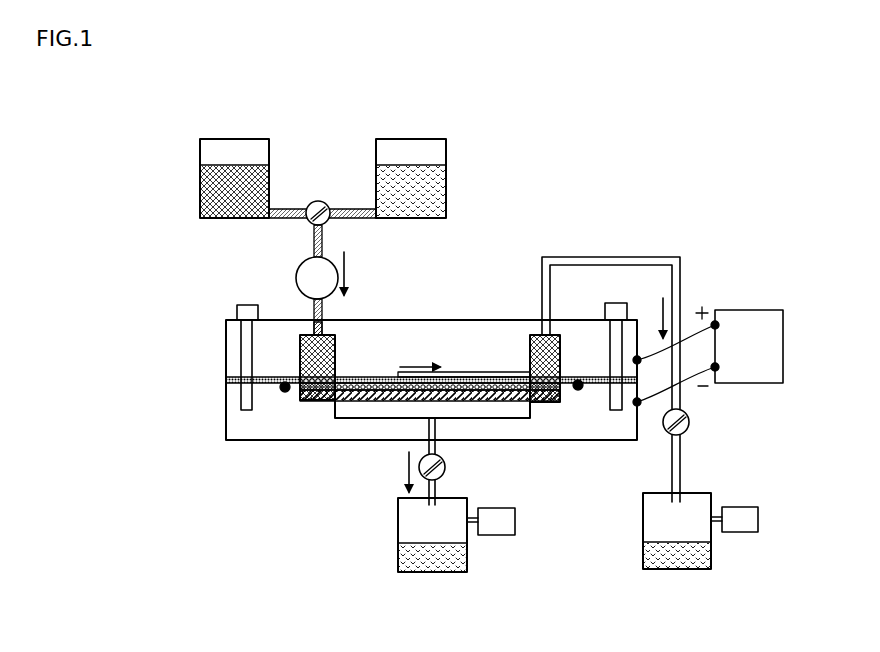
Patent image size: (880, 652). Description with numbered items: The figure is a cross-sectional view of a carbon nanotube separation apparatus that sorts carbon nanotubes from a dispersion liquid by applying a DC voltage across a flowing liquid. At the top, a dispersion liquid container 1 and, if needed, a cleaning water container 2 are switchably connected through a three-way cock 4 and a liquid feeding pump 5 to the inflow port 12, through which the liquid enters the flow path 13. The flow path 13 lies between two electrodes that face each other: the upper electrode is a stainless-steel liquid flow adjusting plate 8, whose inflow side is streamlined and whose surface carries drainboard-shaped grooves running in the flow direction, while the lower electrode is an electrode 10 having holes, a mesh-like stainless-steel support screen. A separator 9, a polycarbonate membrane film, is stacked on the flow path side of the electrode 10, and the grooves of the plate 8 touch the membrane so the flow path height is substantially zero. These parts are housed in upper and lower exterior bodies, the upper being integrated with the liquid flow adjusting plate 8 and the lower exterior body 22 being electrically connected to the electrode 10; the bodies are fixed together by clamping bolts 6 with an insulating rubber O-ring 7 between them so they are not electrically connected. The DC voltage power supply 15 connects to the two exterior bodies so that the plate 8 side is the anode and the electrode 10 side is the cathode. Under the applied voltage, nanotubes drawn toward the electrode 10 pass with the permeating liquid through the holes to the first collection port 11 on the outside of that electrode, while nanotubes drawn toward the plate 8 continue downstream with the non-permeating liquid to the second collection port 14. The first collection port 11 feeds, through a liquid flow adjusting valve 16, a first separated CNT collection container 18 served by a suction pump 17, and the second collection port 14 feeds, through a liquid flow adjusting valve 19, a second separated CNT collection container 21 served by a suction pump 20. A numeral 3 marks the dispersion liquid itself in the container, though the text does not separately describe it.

The dispersion liquid container 1 is at (228, 139).
The cleaning water container 2 is at (410, 139).
The plating liquid 3 is at (232, 192).
The three-way cock 4 is at (309, 205).
The liquid feeding pump 5 is at (297, 270).
The clamping bolts 6 is at (238, 311).
The rubber O-ring 7 is at (275, 389).
The liquid flow adjusting plate 8 is at (288, 347).
The separator 9 is at (330, 400).
The electrode having holes 10 is at (350, 394).
The first collection port 11 is at (402, 412).
The inflow port 12 is at (328, 334).
The flow path 13 is at (490, 375).
The second collection port 14 is at (547, 338).
The DC voltage power supply 15 is at (708, 356).
The liquid flow adjusting valve 16 is at (448, 468).
The suction pump 17 is at (492, 535).
The first separated CNT collection container 18 is at (396, 575).
The liquid flow adjusting valve 19 is at (690, 422).
The suction pump 20 is at (733, 535).
The second separated CNT collection container 21 is at (646, 573).
The exterior body 22 is at (610, 428).